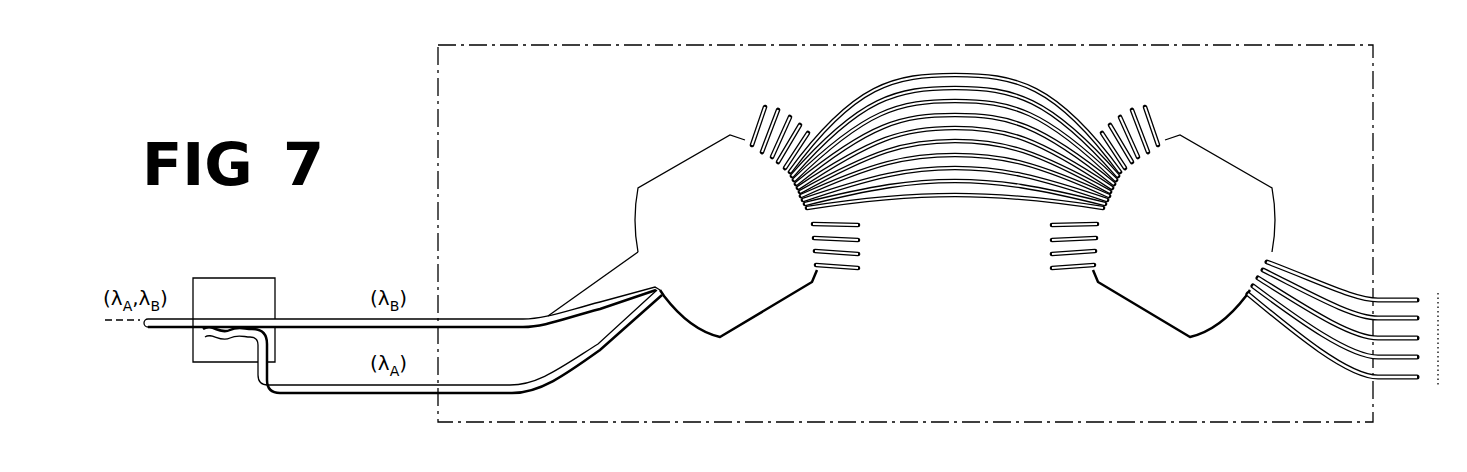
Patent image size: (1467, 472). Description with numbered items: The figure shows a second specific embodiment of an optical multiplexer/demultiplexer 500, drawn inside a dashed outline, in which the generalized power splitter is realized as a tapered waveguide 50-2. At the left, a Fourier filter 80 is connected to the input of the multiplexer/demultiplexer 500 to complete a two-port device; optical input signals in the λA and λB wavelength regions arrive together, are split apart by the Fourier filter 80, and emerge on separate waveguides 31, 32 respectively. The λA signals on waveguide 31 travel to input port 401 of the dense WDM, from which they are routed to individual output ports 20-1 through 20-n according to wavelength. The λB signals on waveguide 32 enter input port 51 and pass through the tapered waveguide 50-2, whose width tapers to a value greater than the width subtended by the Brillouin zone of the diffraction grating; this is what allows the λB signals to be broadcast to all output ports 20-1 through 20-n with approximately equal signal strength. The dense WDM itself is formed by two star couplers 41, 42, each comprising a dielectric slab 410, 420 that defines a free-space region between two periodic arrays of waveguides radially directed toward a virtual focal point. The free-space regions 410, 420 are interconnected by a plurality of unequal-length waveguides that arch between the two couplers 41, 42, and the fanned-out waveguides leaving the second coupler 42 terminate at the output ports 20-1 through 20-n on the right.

The optical multiplexer/demultiplexer 500 is at (438, 72).
The Fourier filter 80 is at (238, 278).
The waveguide 32 is at (348, 318).
The waveguide 31 is at (347, 385).
The input port 51 is at (508, 318).
The input port 401 is at (513, 385).
The tapered waveguide 50-2 is at (612, 280).
The star coupler 41 is at (746, 222).
The dielectric slab 410 is at (742, 241).
The star coupler 42 is at (1163, 222).
The dielectric slab 420 is at (1200, 241).
The output port 20-1 is at (1393, 296).
The output port 20-n is at (1393, 381).